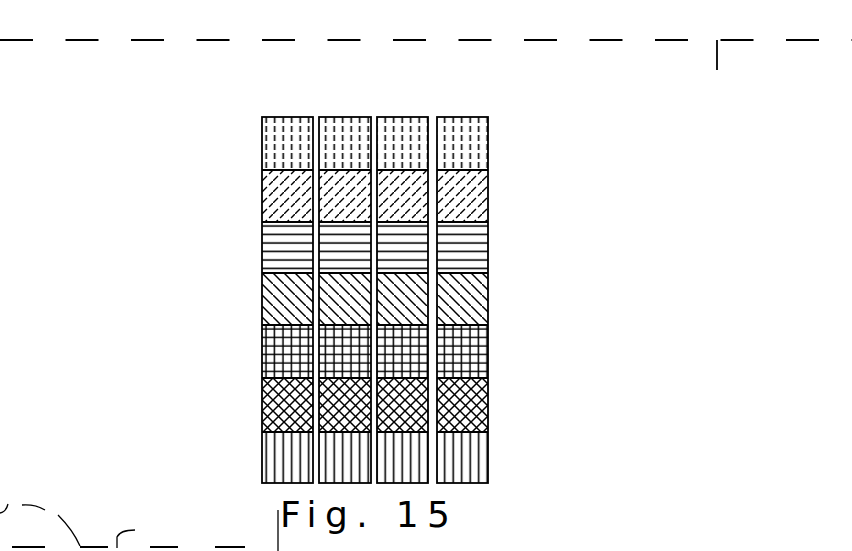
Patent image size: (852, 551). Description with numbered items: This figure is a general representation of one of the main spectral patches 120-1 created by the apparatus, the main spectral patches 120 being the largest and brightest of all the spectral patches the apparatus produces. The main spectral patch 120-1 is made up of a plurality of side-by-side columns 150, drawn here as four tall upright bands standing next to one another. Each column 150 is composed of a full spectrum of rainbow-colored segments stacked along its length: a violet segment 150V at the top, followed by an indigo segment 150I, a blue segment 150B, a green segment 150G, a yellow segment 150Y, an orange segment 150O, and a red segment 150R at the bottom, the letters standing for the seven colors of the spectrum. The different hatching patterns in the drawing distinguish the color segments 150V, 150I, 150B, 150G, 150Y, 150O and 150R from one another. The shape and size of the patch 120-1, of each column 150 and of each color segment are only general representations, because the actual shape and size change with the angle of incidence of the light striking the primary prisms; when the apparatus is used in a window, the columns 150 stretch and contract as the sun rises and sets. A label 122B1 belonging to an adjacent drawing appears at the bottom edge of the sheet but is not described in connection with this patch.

The side-by-side columns 150 is at (288, 117).
The violet segment 150V is at (282, 143).
The indigo segment 150I is at (276, 190).
The blue segment 150B is at (283, 244).
The green segment 150G is at (283, 292).
The yellow segment 150Y is at (283, 354).
The orange segment 150O is at (283, 404).
The red segment 150R is at (283, 452).
The main spectral patch 120-1 is at (250, 105).
The main spectral patches 120 is at (715, 105).
The sub-element 122B1 is at (139, 527).